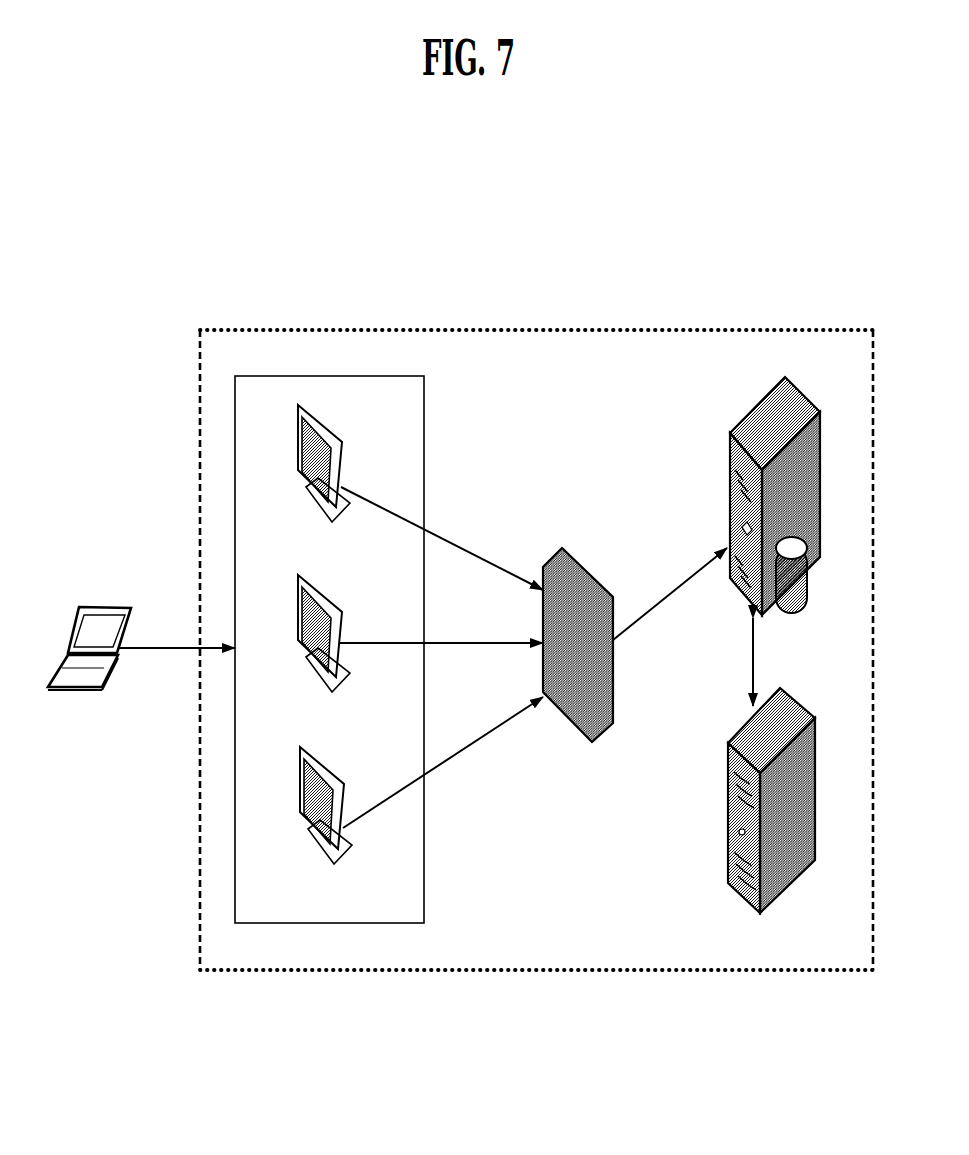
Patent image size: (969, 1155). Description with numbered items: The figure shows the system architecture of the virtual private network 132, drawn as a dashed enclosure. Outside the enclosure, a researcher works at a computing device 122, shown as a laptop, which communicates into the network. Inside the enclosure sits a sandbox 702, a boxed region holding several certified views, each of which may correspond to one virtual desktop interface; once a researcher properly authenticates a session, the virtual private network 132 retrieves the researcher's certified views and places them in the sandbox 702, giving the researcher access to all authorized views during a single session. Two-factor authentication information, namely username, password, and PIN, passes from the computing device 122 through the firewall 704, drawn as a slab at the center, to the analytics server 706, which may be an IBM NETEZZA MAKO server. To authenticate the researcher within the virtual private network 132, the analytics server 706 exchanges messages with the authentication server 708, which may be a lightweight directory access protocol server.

The computing device 122 is at (110, 625).
The virtual private network 132 is at (478, 330).
The sandbox 702 is at (424, 456).
The firewall 704 is at (585, 567).
The analytics server 706 is at (805, 403).
The authentication server 708 is at (812, 718).